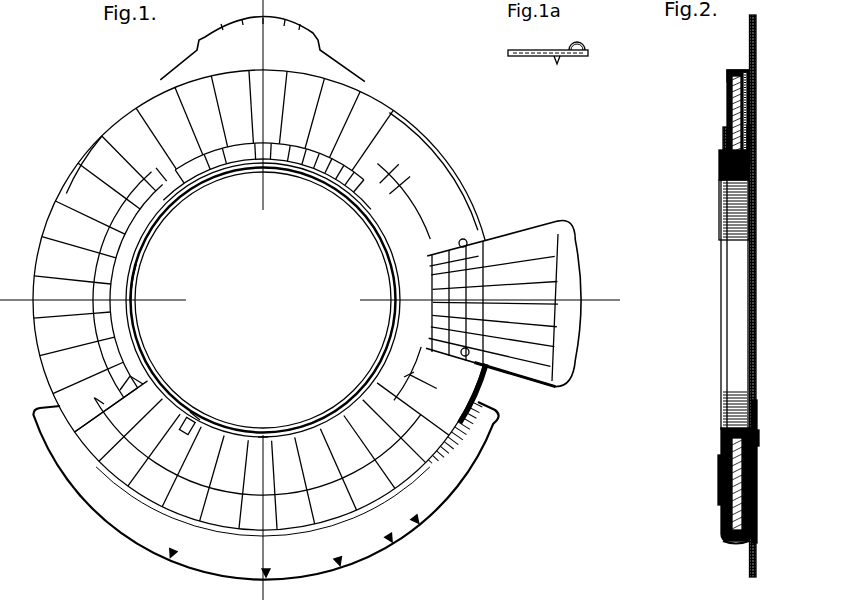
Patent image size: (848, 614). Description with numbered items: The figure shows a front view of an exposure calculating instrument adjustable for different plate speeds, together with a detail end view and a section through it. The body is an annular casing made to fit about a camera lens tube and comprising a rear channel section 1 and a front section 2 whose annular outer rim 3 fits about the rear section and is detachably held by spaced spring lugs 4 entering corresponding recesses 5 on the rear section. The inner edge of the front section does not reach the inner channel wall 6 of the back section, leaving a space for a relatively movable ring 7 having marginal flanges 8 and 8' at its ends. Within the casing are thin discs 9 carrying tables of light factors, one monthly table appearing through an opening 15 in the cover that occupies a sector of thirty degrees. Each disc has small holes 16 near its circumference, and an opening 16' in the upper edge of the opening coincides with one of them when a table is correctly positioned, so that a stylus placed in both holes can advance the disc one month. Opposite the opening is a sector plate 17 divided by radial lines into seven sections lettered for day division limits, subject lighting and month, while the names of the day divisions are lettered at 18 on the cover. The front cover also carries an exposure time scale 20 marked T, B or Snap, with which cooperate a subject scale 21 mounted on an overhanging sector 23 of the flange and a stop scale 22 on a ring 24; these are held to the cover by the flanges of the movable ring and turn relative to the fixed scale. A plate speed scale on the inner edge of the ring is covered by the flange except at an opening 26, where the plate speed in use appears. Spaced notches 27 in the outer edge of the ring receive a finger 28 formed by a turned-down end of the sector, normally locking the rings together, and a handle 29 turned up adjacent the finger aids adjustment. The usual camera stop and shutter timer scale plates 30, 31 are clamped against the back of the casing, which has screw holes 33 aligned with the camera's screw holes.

In FIG. 2, the rear channel section 1 is at (756, 135).
In FIG. 1, the front section 2 is at (418, 145).
In FIG. 2, the front section 2 is at (727, 104).
In FIG. 1, the annular outer rim 3 is at (12, 313).
In FIG. 2, the annular outer rim 3 is at (736, 542).
In FIG. 2, the spring lugs 4 is at (737, 71).
In FIG. 2, the recesses 5 is at (729, 79).
In FIG. 1, the inner channel wall 6 is at (388, 256).
In FIG. 2, the inner channel wall 6 is at (721, 366).
In FIG. 2, the movable ring 7 is at (723, 208).
In FIG. 1, the marginal flange 8 is at (266, 300).
In FIG. 1A, the marginal flange 8 is at (547, 66).
In FIG. 2, the marginal flange 8 is at (722, 165).
In FIG. 2, the marginal flange 8' is at (762, 147).
In FIG. 2, the thin discs 9 is at (737, 508).
In FIG. 1, the opening 15 is at (445, 355).
In FIG. 1, the small holes 16 is at (485, 393).
In FIG. 1, the opening 16' is at (489, 230).
In FIG. 1, the sector plate 17 is at (561, 226).
In FIG. 1, the day division names 18 is at (455, 193).
In FIG. 1, the scale 20 is at (68, 186).
In FIG. 1, the subject scale 21 is at (262, 437).
In FIG. 1, the stop scale 22 is at (134, 247).
In FIG. 1A, the overhanging sector 23 is at (577, 46).
In FIG. 2, the overhanging sector 23 is at (721, 488).
In FIG. 1, the ring 24 is at (401, 114).
In FIG. 2, the ring 24 is at (723, 135).
In FIG. 1, the opening 26 is at (195, 415).
In FIG. 1, the notches 27 is at (408, 378).
In FIG. 1, the finger 28 is at (129, 377).
In FIG. 1A, the finger 28 is at (544, 50).
In FIG. 1, the handle 29 is at (100, 402).
In FIG. 1A, the handle 29 is at (583, 46).
In FIG. 1, the stop scale plate 30 is at (476, 457).
In FIG. 1, the shutter timer scale plate 31 is at (324, 62).
In FIG. 2, the screw holes 33 is at (758, 438).